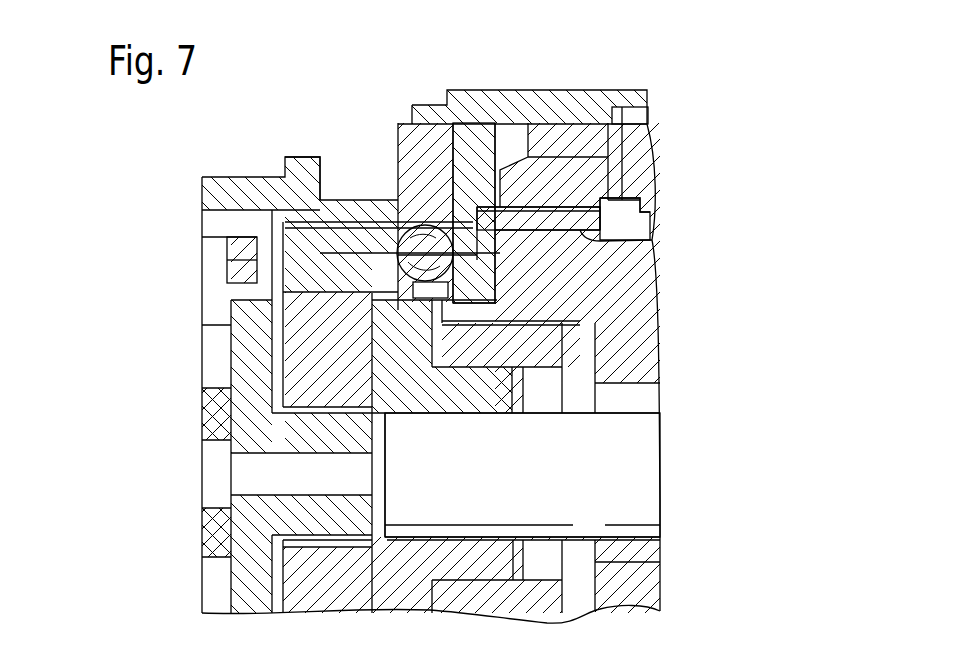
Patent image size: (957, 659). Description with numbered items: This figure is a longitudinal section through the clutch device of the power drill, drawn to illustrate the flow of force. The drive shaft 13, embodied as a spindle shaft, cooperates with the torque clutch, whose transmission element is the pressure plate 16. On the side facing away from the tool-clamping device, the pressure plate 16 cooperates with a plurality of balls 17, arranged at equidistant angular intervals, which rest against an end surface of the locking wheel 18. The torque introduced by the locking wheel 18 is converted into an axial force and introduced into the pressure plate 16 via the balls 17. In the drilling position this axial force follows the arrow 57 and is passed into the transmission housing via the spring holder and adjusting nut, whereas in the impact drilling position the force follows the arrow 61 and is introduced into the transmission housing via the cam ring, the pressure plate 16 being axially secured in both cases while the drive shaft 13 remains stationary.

The drive shaft 13 is at (540, 493).
The pressure plate 16 is at (480, 130).
The balls 17 is at (396, 223).
The locking wheel 18 is at (305, 237).
The arrow 57 is at (575, 210).
The arrow 61 is at (600, 238).